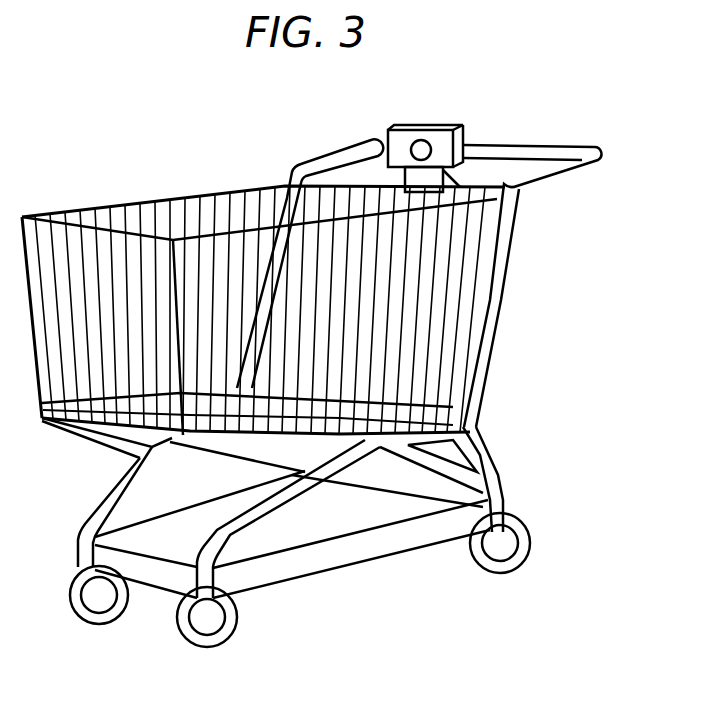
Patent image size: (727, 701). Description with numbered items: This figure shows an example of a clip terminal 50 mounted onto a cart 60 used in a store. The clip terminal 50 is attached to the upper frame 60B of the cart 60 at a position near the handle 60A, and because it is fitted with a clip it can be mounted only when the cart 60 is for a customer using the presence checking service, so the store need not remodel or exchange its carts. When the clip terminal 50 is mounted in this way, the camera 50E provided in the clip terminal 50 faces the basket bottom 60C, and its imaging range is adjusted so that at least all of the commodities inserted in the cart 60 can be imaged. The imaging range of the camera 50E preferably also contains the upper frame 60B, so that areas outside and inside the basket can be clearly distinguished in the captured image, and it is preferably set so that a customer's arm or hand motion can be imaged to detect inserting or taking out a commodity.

The clip terminal 50 is at (452, 124).
The camera 50E is at (419, 140).
The cart 60 is at (547, 270).
The handle 60A is at (549, 148).
The upper frame 60B is at (217, 190).
The basket bottom 60C is at (468, 423).